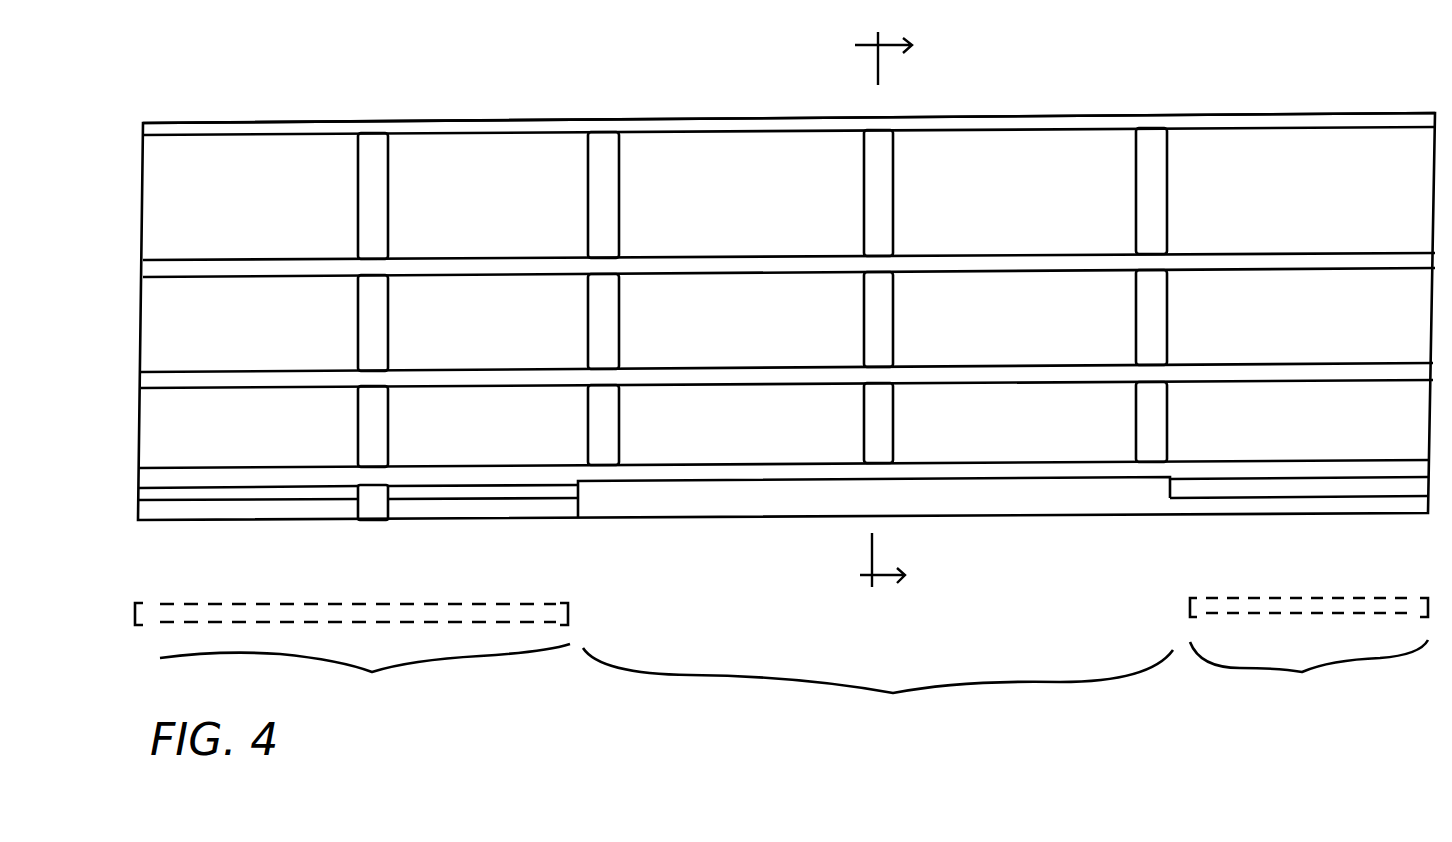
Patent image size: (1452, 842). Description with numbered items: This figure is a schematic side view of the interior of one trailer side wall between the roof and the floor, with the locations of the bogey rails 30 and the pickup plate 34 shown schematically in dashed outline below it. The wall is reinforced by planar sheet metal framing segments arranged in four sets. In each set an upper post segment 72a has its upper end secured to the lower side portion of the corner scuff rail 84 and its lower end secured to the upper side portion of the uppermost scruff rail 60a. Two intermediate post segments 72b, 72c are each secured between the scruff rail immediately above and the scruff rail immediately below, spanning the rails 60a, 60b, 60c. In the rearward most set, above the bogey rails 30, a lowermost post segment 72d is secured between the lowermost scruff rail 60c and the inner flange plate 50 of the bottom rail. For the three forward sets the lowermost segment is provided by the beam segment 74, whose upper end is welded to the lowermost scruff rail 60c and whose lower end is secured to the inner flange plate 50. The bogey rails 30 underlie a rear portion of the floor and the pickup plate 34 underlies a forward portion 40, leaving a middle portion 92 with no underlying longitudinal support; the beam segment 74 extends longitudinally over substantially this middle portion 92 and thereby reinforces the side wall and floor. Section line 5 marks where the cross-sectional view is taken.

The corner scuff rail 84 is at (262, 130).
The uppermost scruff rail 60a is at (254, 262).
The scruff rail 60b is at (254, 376).
The lowermost scruff rail 60c is at (256, 440).
The upper post segment 72a is at (386, 202).
The intermediate post segment 72b is at (384, 328).
The intermediate post segment 72c is at (384, 428).
The lowermost post segment 72d is at (372, 506).
The beam segment 74 is at (684, 496).
The inner flange plate 50 is at (246, 504).
The section line 5- 5 is at (861, 314).
The bogey rails 30 is at (574, 612).
The pickup plate 34 is at (1186, 606).
The middle portion 92 is at (878, 689).
The forward portion 40 is at (1309, 676).